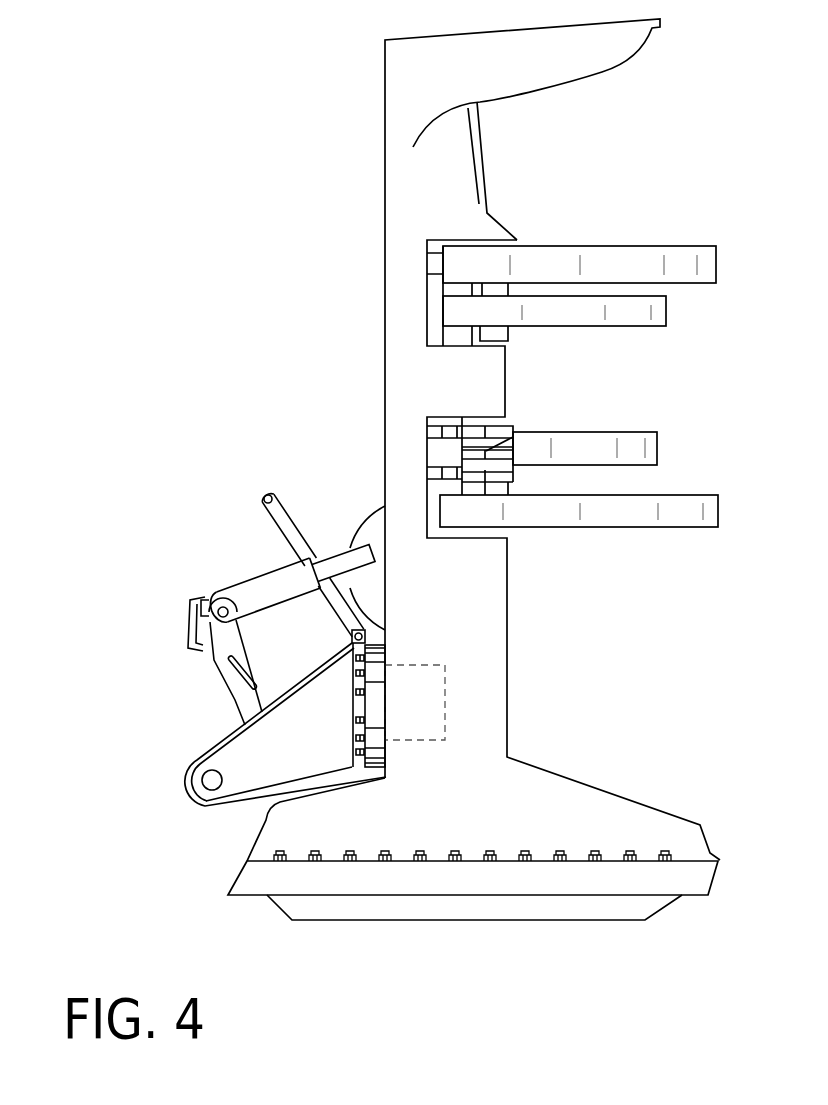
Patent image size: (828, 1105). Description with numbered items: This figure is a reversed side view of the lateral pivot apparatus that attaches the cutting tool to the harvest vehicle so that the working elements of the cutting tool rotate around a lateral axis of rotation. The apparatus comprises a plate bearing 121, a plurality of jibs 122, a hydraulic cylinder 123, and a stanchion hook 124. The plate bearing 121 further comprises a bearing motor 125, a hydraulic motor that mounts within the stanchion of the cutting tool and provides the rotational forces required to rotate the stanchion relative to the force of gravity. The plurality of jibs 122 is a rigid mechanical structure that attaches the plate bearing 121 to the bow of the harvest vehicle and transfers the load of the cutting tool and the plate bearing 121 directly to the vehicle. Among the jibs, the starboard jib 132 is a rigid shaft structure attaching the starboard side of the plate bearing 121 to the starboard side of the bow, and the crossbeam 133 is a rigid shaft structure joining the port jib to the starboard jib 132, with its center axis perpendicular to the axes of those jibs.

The plate bearing 121 is at (375, 655).
The plurality of jibs 122 is at (173, 757).
The hydraulic cylinder 123 is at (270, 583).
The stanchion hook 124 is at (222, 685).
The bearing motor 125 is at (435, 708).
The starboard jib 132 is at (252, 777).
The crossbeam 133 is at (355, 737).